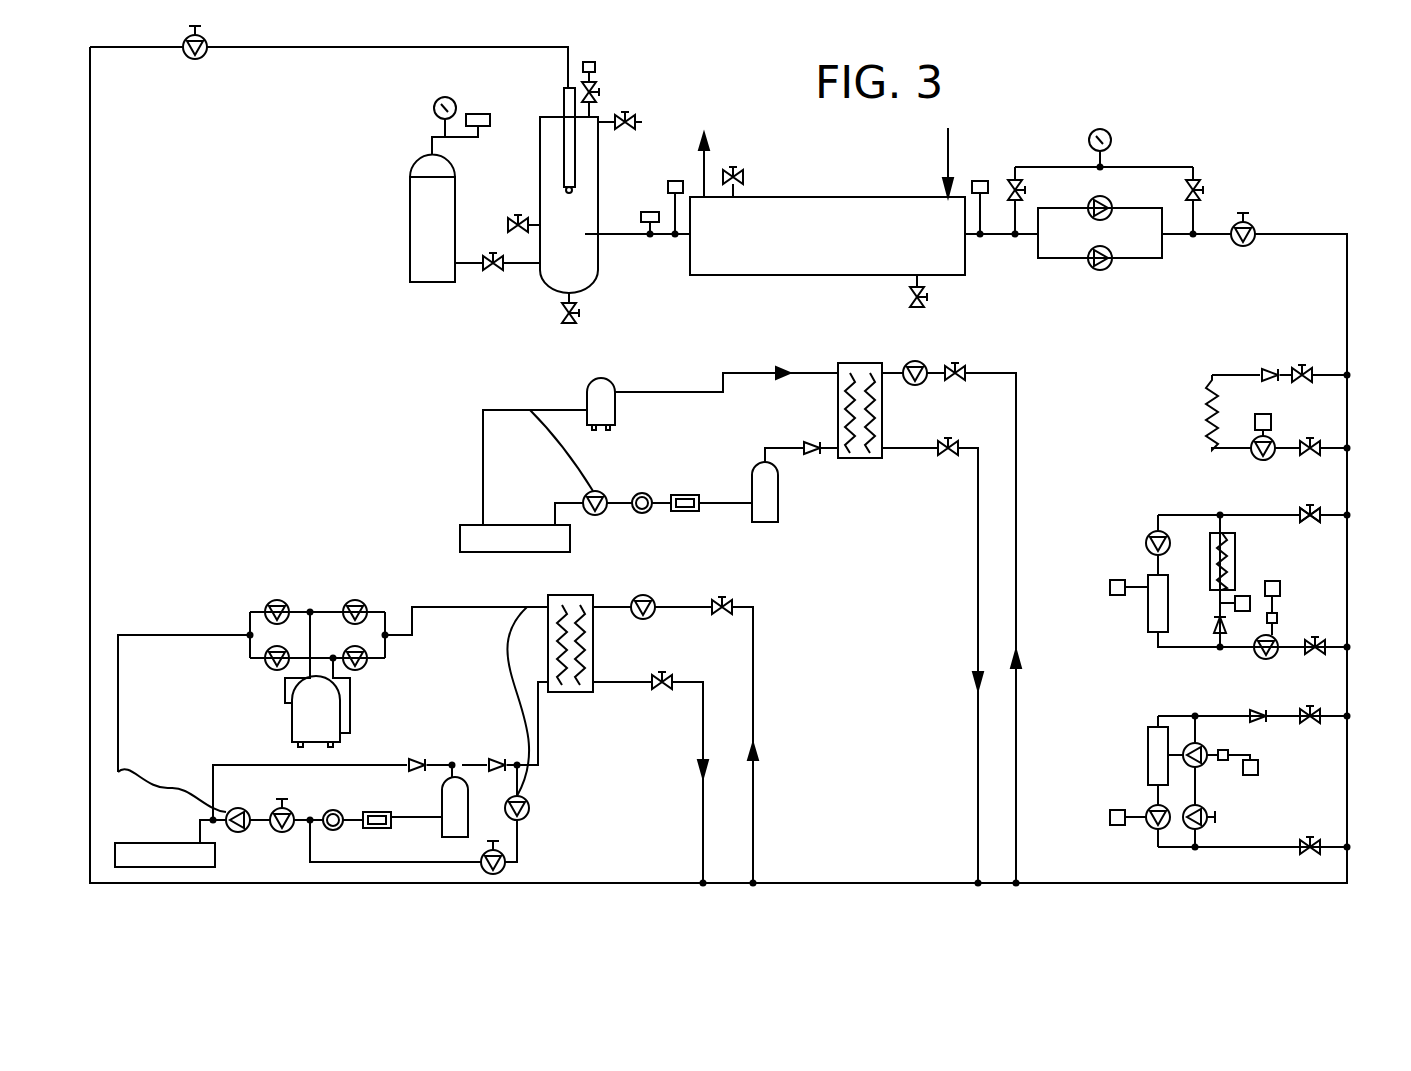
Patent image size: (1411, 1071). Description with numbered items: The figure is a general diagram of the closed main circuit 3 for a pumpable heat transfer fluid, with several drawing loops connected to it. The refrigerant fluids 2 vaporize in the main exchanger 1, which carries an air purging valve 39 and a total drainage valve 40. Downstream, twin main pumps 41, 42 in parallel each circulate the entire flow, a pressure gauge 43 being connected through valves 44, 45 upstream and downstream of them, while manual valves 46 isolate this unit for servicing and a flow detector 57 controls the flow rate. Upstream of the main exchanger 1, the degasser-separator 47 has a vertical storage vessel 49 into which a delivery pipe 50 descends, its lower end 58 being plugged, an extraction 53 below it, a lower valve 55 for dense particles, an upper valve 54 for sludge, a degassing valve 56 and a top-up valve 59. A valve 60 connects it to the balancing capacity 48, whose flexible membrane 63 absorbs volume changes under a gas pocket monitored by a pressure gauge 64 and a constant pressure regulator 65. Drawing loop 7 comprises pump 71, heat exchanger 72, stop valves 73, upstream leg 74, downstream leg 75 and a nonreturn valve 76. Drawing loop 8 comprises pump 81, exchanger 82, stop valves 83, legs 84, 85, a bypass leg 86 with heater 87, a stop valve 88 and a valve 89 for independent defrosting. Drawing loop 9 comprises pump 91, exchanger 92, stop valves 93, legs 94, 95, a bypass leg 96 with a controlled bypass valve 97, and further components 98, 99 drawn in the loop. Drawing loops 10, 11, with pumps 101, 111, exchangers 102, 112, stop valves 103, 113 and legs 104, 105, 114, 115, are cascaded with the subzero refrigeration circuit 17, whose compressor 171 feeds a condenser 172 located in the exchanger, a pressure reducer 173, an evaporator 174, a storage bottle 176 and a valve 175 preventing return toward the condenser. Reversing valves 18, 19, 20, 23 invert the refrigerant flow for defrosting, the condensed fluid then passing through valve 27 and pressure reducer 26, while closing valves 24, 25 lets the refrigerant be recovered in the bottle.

The main exchanger 1 is at (850, 222).
The refrigerant fluids 2 is at (952, 150).
The main circuit 3 is at (92, 265).
The drawing loop 7 is at (1335, 400).
The drawing loop 8 is at (1335, 560).
The drawing loop 9 is at (1330, 778).
The drawing loop 10 is at (1000, 485).
The drawing loop 11 is at (738, 712).
The subzero refrigeration circuit 17 is at (727, 488).
The reversing valve 18 is at (362, 670).
The reversing valve 19 is at (360, 602).
The reversing valve 20 is at (272, 602).
The reversing valve 23 is at (268, 670).
The valve 24 is at (290, 808).
The valve 25 is at (505, 870).
The pressure reducer 26 is at (528, 815).
The valve 27 is at (415, 758).
The air purging valve 39 is at (750, 170).
The total drainage valve 40 is at (928, 303).
The main pump 41 is at (1110, 200).
The main pump 42 is at (1108, 270).
The pressure gauge 43 is at (1108, 132).
The valve 44 is at (1012, 180).
The valve 45 is at (1205, 185).
The manual valve 46 is at (195, 60).
The degasser-separator 47 is at (583, 258).
The balancing capacity 48 is at (430, 228).
The storage vessel 49 is at (540, 285).
The delivery pipe 50 is at (576, 145).
The extraction 53 is at (610, 240).
The upper valve 54 is at (638, 120).
The lower valve 55 is at (580, 318).
The degassing valve 56 is at (603, 95).
The flow detector 57 is at (648, 210).
The nozzle 58 is at (562, 185).
The valve 59 is at (507, 222).
The valve 60 is at (483, 272).
The flexible membrane 63 is at (420, 172).
The pressure gauge 64 is at (432, 108).
The constant pressure regulator 65 is at (480, 113).
The pump 71 is at (1255, 460).
The heat exchanger 72 is at (1210, 412).
The stop valve 73 is at (1305, 372).
The upstream leg 74 is at (1308, 508).
The downstream leg 75 is at (1285, 373).
The nonreturn valve 76 is at (1262, 372).
The pump 81 is at (1146, 540).
The exchanger 82 is at (1152, 617).
The stop valve 83 is at (1306, 520).
The upstream leg 84 is at (1262, 513).
The downstream leg 85 is at (1218, 650).
The bypass leg 86 is at (1222, 520).
The heater 87 is at (1215, 562).
The stop valve 88 is at (1262, 660).
The valve 89 is at (1212, 622).
The pump 91 is at (1150, 828).
The exchanger 92 is at (1148, 748).
The stop valve 93 is at (1308, 728).
The upstream leg 94 is at (1200, 850).
The downstream leg 95 is at (1212, 714).
The bypass leg 96 is at (1205, 790).
The controlled bypass valve 97 is at (1180, 760).
The pump 98 is at (1215, 830).
The check valve 99 is at (1258, 712).
The pump 101 is at (913, 361).
The exchanger 102 is at (870, 462).
The stop valve 103 is at (968, 368).
The upstream leg 104 is at (1018, 720).
The downstream leg 105 is at (975, 760).
The pump 111 is at (648, 595).
The exchanger 112 is at (572, 690).
The stop valve 113 is at (722, 615).
The upstream leg 114 is at (758, 792).
The downstream leg 115 is at (700, 796).
The compressor 171 is at (592, 382).
The condenser 172 is at (845, 395).
The pressure reducer 173 is at (598, 512).
The evaporator 174 is at (478, 525).
The valve 175 is at (812, 458).
The storage bottle 176 is at (770, 508).